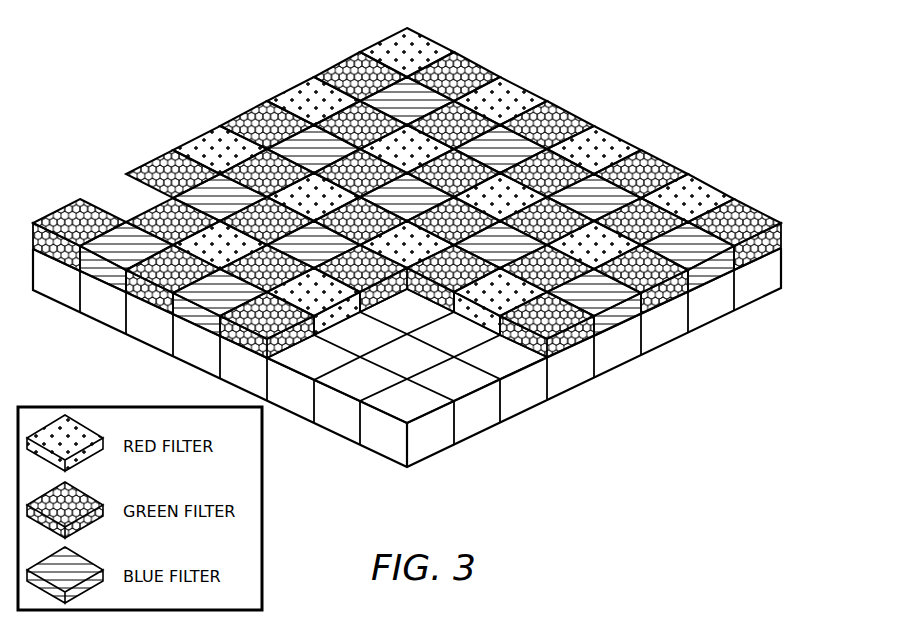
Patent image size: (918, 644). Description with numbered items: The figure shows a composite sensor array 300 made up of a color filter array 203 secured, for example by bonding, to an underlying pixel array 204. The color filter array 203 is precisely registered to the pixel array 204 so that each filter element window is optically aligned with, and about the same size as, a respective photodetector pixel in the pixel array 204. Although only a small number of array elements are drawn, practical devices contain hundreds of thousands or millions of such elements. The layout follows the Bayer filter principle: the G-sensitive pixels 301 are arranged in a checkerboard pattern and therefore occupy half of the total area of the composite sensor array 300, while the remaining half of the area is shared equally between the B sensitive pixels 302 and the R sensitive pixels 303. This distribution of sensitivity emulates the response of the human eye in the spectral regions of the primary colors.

The color filter array 203 is at (420, 193).
The pixel array 204 is at (675, 352).
The composite sensor array 300 is at (420, 247).
The G-sensitive pixels 301 is at (167, 170).
The B sensitive pixels 302 is at (508, 145).
The R sensitive pixels 303 is at (308, 97).